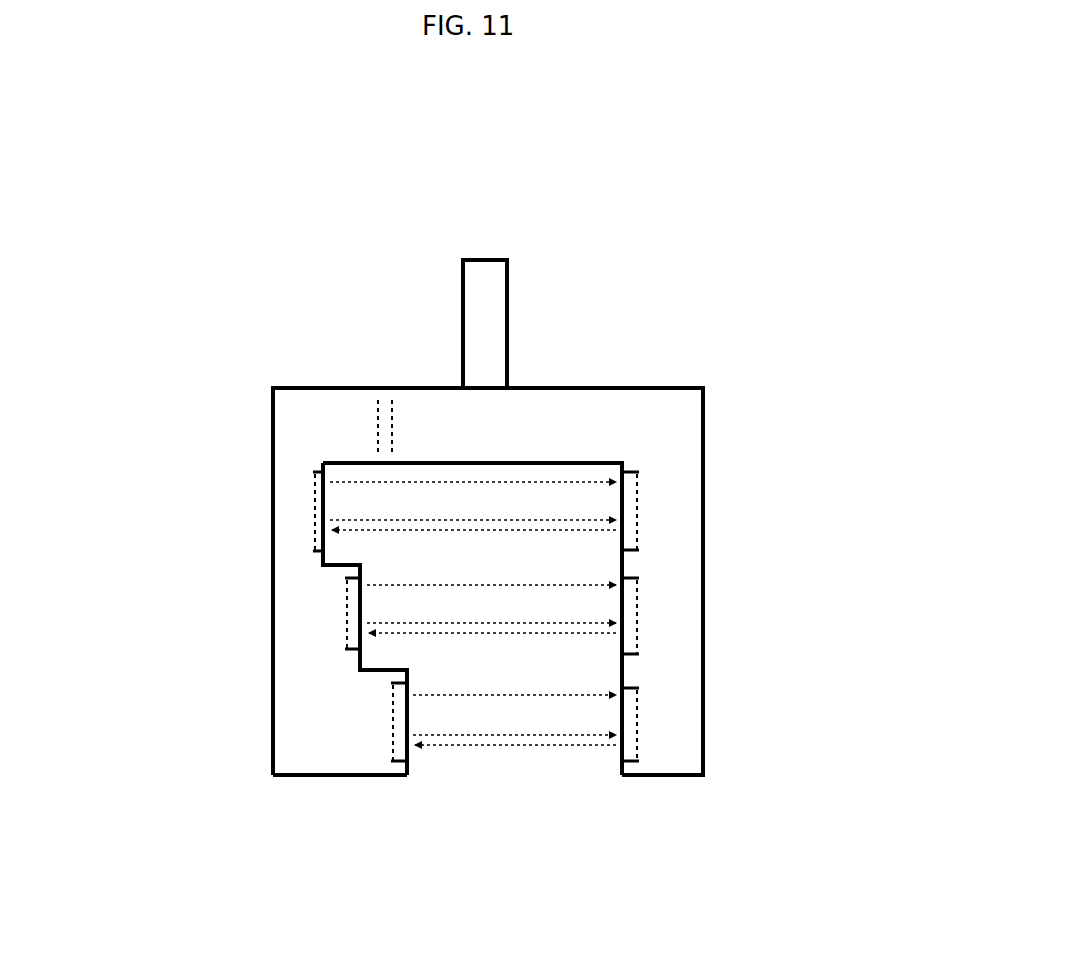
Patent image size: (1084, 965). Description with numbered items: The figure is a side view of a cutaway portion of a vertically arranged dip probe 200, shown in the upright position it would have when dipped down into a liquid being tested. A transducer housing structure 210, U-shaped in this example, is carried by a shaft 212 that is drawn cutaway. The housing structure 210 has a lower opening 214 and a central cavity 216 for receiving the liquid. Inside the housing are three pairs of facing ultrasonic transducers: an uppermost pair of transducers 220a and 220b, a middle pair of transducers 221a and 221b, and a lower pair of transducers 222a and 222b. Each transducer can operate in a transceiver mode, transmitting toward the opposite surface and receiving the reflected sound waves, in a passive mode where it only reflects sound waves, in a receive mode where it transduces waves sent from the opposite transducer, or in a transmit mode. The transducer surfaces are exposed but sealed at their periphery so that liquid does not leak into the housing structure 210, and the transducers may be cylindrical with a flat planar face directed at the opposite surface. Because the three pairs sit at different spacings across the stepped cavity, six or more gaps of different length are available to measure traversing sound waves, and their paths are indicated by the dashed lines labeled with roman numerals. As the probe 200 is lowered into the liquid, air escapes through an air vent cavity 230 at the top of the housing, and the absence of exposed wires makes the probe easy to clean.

The dip probe 200 is at (799, 358).
The transducer housing structure 210 is at (600, 387).
The shaft 212 is at (500, 316).
The lower opening 214 is at (528, 780).
The central cavity 216 is at (500, 576).
The air vent cavity 230 is at (378, 420).
The ultrasonic transducer 220a is at (313, 503).
The ultrasonic transducer 220b is at (630, 510).
The ultrasonic transducer 221a is at (350, 618).
The ultrasonic transducer 221b is at (630, 620).
The ultrasonic transducer 222a is at (400, 704).
The ultrasonic transducer 222b is at (628, 731).